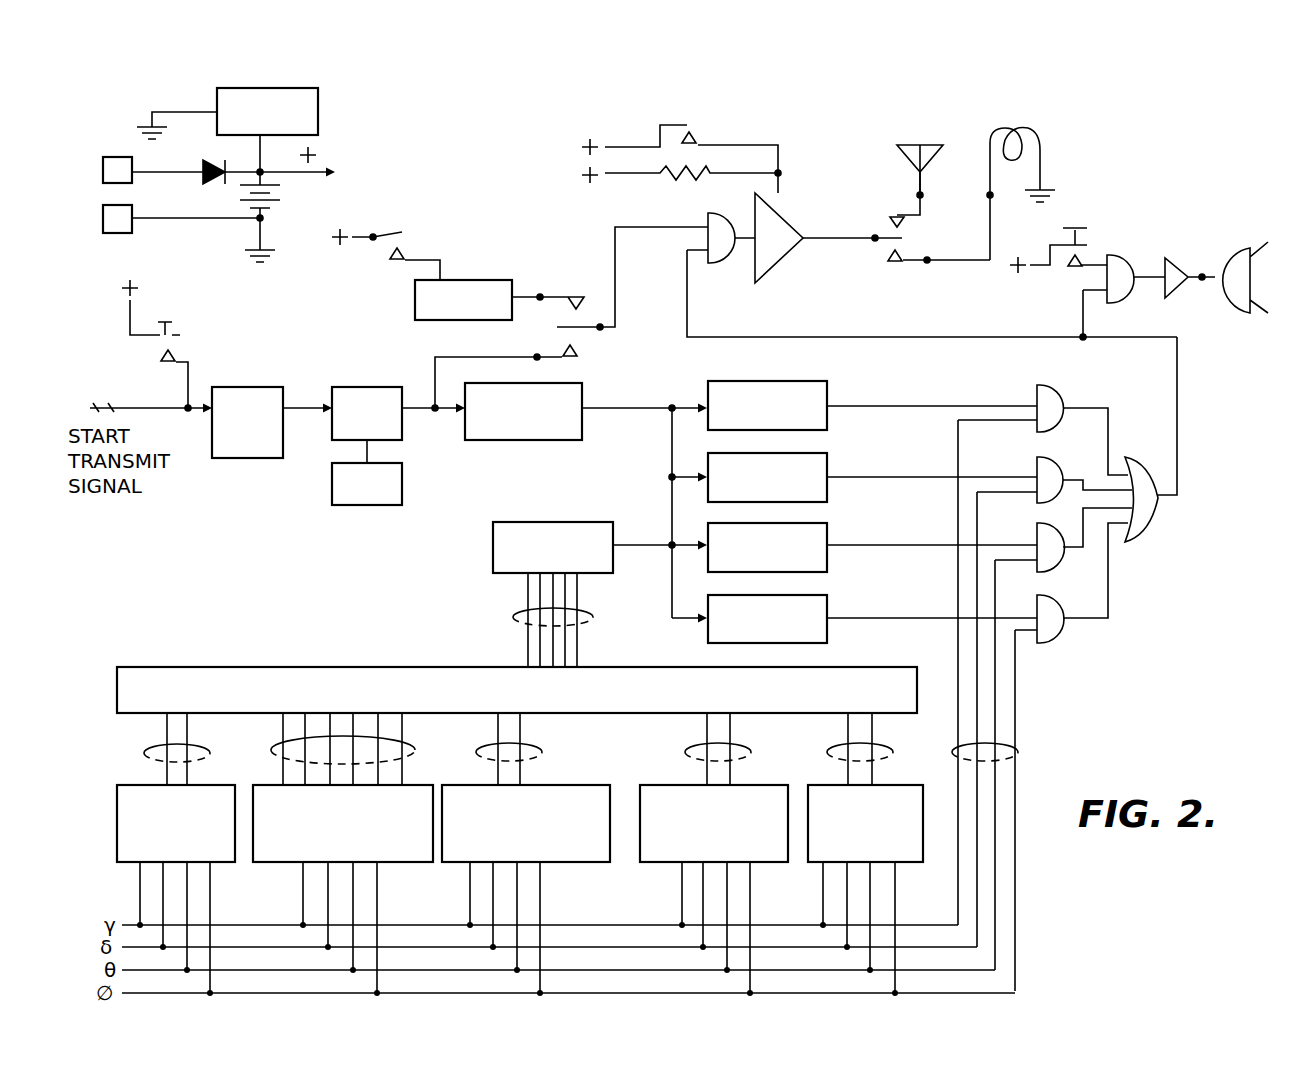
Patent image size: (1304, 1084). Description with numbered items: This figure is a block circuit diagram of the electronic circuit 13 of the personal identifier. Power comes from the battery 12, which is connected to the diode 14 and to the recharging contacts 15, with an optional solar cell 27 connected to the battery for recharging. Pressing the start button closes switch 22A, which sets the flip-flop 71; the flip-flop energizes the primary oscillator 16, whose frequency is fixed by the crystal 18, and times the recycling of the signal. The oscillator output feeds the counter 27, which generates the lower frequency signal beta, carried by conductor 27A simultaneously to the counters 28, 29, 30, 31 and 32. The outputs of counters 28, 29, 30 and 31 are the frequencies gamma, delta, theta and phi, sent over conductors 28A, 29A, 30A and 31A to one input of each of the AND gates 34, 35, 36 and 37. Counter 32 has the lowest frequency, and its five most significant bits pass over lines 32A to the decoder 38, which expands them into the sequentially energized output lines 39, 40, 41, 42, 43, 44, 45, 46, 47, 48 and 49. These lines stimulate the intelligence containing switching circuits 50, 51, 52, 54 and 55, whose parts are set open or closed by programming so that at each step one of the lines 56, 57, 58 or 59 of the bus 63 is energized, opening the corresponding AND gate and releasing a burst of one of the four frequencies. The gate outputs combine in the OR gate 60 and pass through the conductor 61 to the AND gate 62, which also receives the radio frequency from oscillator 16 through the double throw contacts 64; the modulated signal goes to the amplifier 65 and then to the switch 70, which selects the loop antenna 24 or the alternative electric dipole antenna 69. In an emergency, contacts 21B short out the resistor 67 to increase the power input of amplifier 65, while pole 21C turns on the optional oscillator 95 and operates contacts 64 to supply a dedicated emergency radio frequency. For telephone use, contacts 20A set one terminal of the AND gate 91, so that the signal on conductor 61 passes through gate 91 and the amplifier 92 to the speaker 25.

The battery 12 is at (272, 203).
The electronic circuit 13 is at (860, 302).
The diode 14 is at (207, 162).
The recharging contacts 15 is at (108, 210).
The primary oscillator 16 is at (374, 387).
The crystal 18 is at (340, 505).
The contacts 20A is at (1080, 226).
The contacts 21B is at (692, 128).
The pole 21C is at (378, 236).
The switch 22A is at (180, 330).
The magnetic dipole antenna 24 is at (1043, 172).
The speaker 25 is at (1255, 226).
The counter 27 is at (318, 122).
The conductor 27A is at (652, 408).
The counter 28 is at (812, 381).
The conductor 28A is at (882, 406).
The counter 29 is at (815, 453).
The conductor 29A is at (930, 474).
The counter 30 is at (815, 523).
The conductor 30A is at (928, 542).
The counter 31 is at (815, 595).
The conductor 31A is at (928, 614).
The counter 32 is at (560, 522).
The lines 32A is at (513, 610).
The AND gate 34 is at (1050, 385).
The AND gate 35 is at (1048, 460).
The AND gate 36 is at (1052, 570).
The AND gate 37 is at (1048, 642).
The decoder 38 is at (237, 668).
The decoder output line 39 is at (166, 738).
The decoder output line 40 is at (188, 738).
The decoder output line 41 is at (284, 738).
The decoder output line 42 is at (320, 718).
The decoder output line 43 is at (402, 722).
The decoder output line 44 is at (498, 722).
The decoder output line 45 is at (520, 722).
The decoder output line 46 is at (707, 730).
The decoder output line 47 is at (730, 722).
The decoder output line 48 is at (848, 730).
The decoder output line 49 is at (872, 722).
The switching circuit 50 is at (117, 832).
The switching circuit 51 is at (290, 865).
The switching circuit 52 is at (458, 865).
The switching circuit 54 is at (668, 865).
The switching circuit 55 is at (822, 865).
The line 56 is at (958, 878).
The line 57 is at (977, 902).
The line 58 is at (995, 932).
The line 59 is at (1010, 956).
The OR gate 60 is at (1140, 540).
The conductor 61 is at (1185, 416).
The AND gate 62 is at (722, 264).
The bus 63 is at (1012, 745).
The double throw contacts 64 is at (585, 335).
The amplifier 65 is at (782, 250).
The resistor 67 is at (672, 180).
The electric dipole antenna 69 is at (900, 160).
The double throw contacts 70 is at (876, 236).
The flip-flop 71 is at (240, 458).
The AND gate 91 is at (1138, 242).
The amplifier 92 is at (1180, 262).
The optional oscillator 95 is at (465, 280).